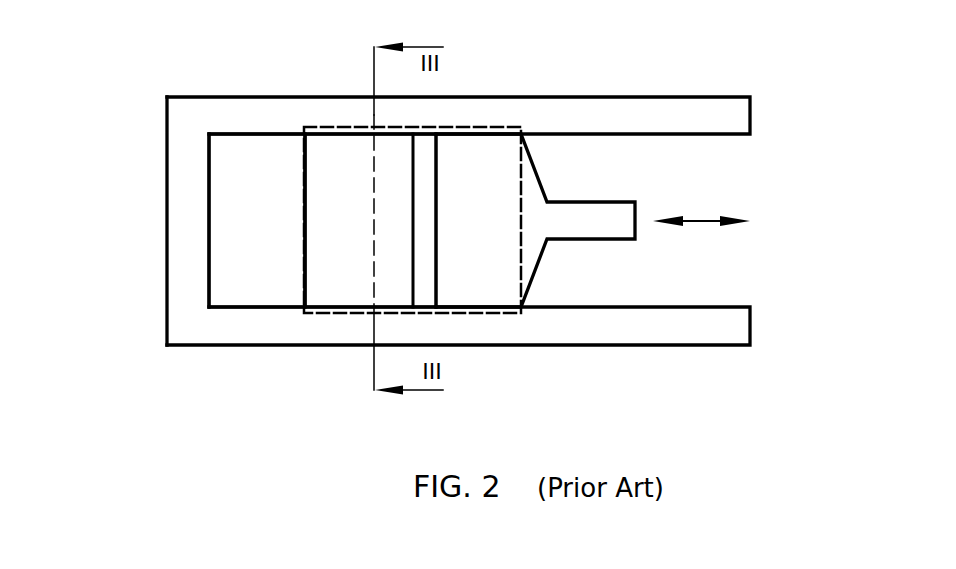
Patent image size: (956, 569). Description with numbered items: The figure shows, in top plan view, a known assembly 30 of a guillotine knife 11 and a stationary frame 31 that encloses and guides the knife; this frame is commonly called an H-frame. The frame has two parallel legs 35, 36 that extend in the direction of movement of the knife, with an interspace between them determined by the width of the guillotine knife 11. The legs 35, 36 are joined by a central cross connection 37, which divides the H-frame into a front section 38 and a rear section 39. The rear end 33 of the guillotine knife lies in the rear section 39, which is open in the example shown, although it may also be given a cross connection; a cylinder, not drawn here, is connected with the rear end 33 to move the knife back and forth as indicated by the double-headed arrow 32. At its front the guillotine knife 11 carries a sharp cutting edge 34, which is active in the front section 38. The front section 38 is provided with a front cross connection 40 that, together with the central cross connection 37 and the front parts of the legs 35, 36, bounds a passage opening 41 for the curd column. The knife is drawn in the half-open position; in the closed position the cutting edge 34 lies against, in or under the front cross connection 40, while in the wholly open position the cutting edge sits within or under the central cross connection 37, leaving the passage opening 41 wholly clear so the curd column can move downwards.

The assembly 30 is at (590, 71).
The front section 38 is at (126, 110).
The leg 35 is at (672, 117).
The leg 36 is at (652, 328).
The stationary frame 31 is at (213, 372).
The front cross connection 40 is at (187, 258).
The passage opening 41 is at (238, 222).
The cutting edge 34 is at (304, 278).
The guillotine knife 11 is at (328, 222).
The central cross connection 37 is at (423, 190).
The rear end 33 is at (544, 223).
The double-headed arrow 32 is at (702, 222).
The rear section 39 is at (761, 179).